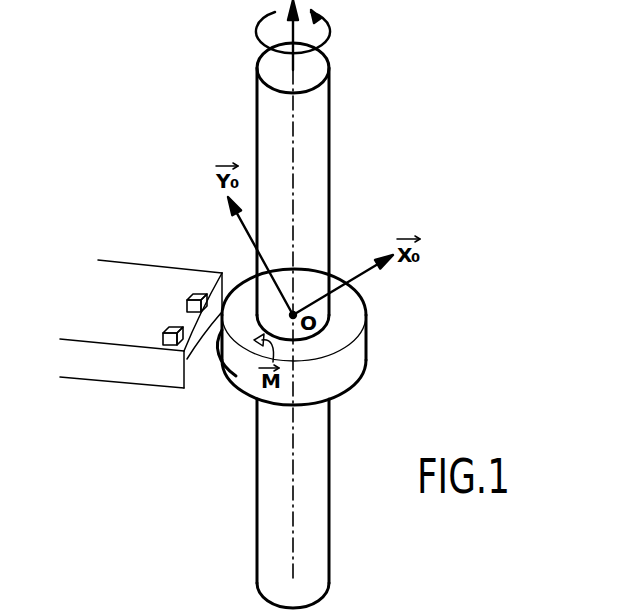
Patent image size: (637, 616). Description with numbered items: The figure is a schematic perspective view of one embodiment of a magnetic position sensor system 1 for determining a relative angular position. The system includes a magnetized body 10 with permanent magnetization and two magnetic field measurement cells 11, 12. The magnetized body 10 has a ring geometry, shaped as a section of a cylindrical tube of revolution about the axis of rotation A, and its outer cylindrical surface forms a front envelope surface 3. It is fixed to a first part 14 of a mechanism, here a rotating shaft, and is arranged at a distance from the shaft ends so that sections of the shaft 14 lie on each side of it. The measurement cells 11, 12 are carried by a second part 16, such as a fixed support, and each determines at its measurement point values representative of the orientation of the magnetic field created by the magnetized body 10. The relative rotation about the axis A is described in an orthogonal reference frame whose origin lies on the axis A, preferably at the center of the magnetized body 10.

The magnetic position sensor system 1 is at (405, 124).
The front envelope surface 3 is at (357, 352).
The magnetized body 10 is at (237, 372).
The magnetic field measurement cell 11 is at (190, 299).
The magnetic field measurement cell 12 is at (170, 333).
The first part of the mechanism 14 is at (320, 172).
The second part of the mechanism 16 is at (120, 380).
The axis of rotation A is at (292, 568).